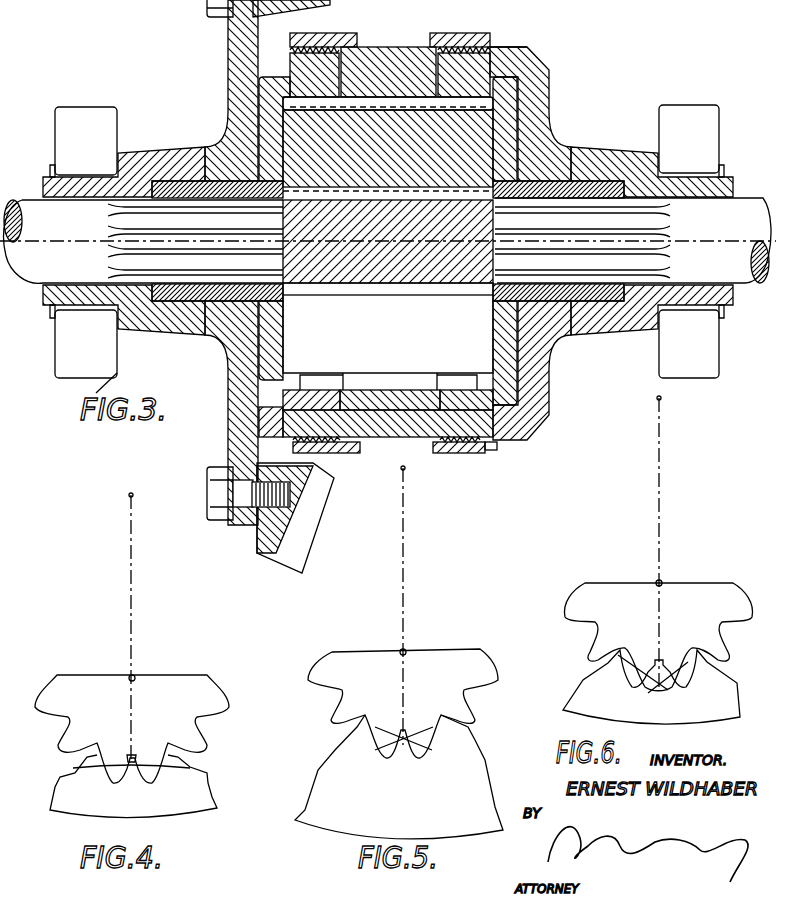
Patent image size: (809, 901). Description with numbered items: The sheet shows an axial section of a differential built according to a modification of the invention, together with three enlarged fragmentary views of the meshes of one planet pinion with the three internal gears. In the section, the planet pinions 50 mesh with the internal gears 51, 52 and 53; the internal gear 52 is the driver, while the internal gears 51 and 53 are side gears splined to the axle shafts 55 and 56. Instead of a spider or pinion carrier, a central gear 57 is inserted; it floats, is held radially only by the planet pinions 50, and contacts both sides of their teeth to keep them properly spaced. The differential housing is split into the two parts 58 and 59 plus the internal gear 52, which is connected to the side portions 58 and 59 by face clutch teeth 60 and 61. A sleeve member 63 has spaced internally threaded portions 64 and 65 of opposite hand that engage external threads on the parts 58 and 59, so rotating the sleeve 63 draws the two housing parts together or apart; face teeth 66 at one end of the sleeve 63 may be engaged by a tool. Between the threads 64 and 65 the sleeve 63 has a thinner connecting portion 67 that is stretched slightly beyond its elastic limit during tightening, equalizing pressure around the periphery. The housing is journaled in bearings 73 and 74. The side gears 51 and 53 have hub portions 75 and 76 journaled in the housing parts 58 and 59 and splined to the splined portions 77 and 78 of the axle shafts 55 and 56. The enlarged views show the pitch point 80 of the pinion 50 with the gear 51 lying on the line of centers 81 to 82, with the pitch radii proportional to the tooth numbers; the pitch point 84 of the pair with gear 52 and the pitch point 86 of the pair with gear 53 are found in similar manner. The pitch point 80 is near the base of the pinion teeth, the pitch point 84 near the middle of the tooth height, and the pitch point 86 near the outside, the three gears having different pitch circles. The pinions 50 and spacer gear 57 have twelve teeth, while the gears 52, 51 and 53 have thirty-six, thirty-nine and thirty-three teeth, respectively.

In FIG. 3, the planet pinion 50 is at (513, 117).
In FIG. 4, the planet pinion 50 is at (192, 685).
In FIG. 5, the planet pinion 50 is at (453, 658).
In FIG. 6, the planet pinion 50 is at (724, 598).
In FIG. 3, the internal side gear 51 is at (270, 96).
In FIG. 4, the internal side gear 51 is at (188, 803).
In FIG. 3, the internal drive gear 52 is at (390, 67).
In FIG. 5, the internal drive gear 52 is at (482, 820).
In FIG. 3, the internal side gear 53 is at (472, 130).
In FIG. 6, the internal side gear 53 is at (650, 712).
In FIG. 3, the axle shaft 55 is at (35, 270).
In FIG. 3, the axle shaft 56 is at (740, 275).
In FIG. 3, the central gear 57 is at (427, 287).
In FIG. 3, the housing part 58 is at (203, 150).
In FIG. 3, the housing part 59 is at (550, 123).
In FIG. 3, the face clutch teeth 60 is at (328, 50).
In FIG. 3, the face clutch teeth 61 is at (440, 58).
In FIG. 3, the sleeve member 63 is at (442, 33).
In FIG. 3, the internally threaded portion 64 is at (290, 52).
In FIG. 3, the internally threaded portion 65 is at (492, 50).
In FIG. 3, the face teeth 66 is at (490, 450).
In FIG. 3, the connecting portion 67 is at (377, 47).
In FIG. 3, the bearing 73 is at (83, 117).
In FIG. 3, the bearing 74 is at (707, 128).
In FIG. 3, the hub portion 75 is at (167, 187).
In FIG. 3, the hub portion 76 is at (588, 183).
In FIG. 3, the splined portion 77 is at (182, 263).
In FIG. 3, the splined portion 78 is at (600, 263).
In FIG. 4, the pitch point 80 is at (132, 762).
In FIG. 3, the pinion center 81 is at (728, 237).
In FIG. 4, the pinion center 81 is at (131, 495).
In FIG. 5, the pinion center 81 is at (403, 468).
In FIG. 6, the pinion center 81 is at (659, 398).
In FIG. 4, the internal gear center 82 is at (136, 677).
In FIG. 5, the internal gear center 82 is at (408, 652).
In FIG. 6, the internal gear center 82 is at (662, 583).
In FIG. 5, the pitch point 84 is at (403, 745).
In FIG. 6, the pitch point 86 is at (660, 688).